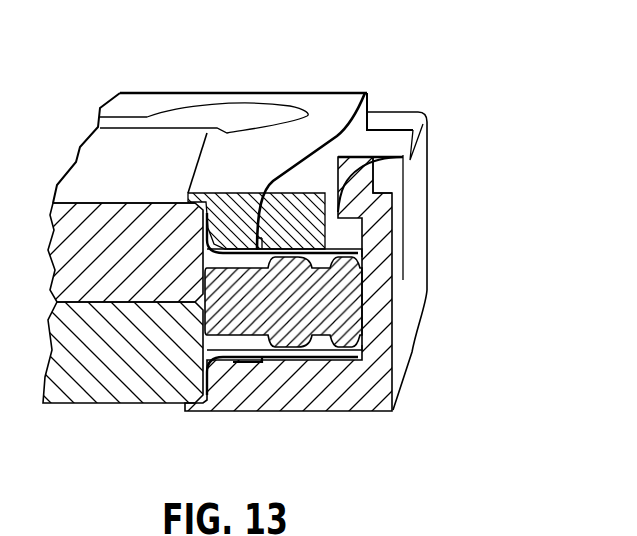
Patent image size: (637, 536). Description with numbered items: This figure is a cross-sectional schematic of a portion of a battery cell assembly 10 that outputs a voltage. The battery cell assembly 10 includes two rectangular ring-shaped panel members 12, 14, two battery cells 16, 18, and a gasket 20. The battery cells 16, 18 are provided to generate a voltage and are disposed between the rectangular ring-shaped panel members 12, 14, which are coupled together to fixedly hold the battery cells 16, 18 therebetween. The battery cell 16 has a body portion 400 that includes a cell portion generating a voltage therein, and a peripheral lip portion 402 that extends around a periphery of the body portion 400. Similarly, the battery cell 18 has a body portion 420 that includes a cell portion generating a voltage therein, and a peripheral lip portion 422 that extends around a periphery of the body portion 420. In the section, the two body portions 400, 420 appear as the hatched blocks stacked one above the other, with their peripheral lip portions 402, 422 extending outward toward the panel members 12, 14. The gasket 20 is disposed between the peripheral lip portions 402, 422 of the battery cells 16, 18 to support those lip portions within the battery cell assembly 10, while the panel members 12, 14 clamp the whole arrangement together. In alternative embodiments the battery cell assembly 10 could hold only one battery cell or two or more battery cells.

The battery cell assembly 10 is at (445, 83).
The rectangular ring-shaped panel member 12 is at (317, 380).
The rectangular ring-shaped panel member 14 is at (292, 100).
The battery cell 16 is at (137, 370).
The battery cell 18 is at (137, 264).
The gasket 20 is at (330, 300).
The body portion 400 is at (167, 350).
The peripheral lip portion 402 is at (242, 352).
The body portion 420 is at (167, 247).
The peripheral lip portion 422 is at (355, 93).